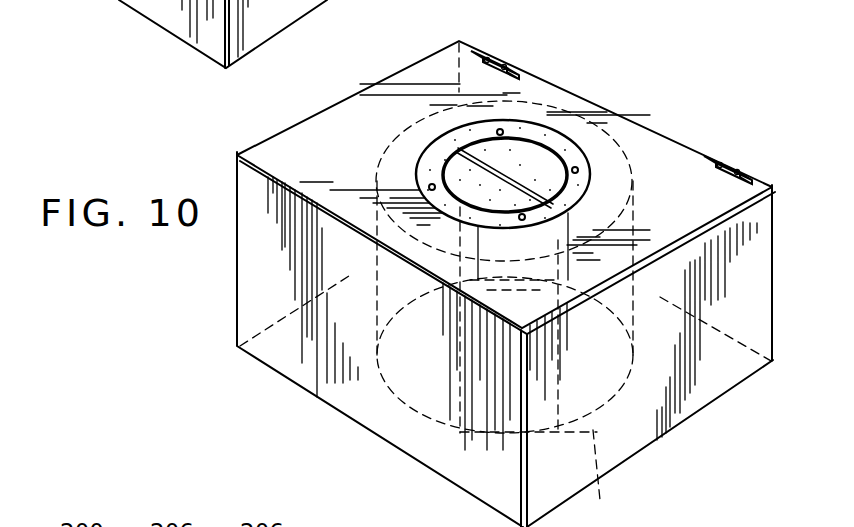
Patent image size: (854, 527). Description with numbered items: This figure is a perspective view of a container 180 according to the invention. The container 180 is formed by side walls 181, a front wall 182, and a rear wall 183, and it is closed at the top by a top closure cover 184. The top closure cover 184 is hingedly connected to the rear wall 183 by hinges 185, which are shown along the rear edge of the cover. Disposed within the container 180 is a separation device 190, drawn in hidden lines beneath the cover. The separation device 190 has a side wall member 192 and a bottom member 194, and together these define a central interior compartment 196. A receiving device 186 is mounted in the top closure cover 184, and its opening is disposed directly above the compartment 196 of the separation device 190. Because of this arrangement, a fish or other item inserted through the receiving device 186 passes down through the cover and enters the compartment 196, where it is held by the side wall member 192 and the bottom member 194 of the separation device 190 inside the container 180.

The container 180 is at (654, 437).
The side walls 181 is at (307, 148).
The front wall 182 is at (245, 275).
The rear wall 183 is at (657, 143).
The top closure cover 184 is at (702, 147).
The hinges 185 is at (512, 60).
The receiving device 186 is at (562, 133).
The separation device 190 is at (623, 478).
The side wall member 192 is at (417, 382).
The bottom member 194 is at (402, 360).
The central interior compartment 196 is at (420, 128).